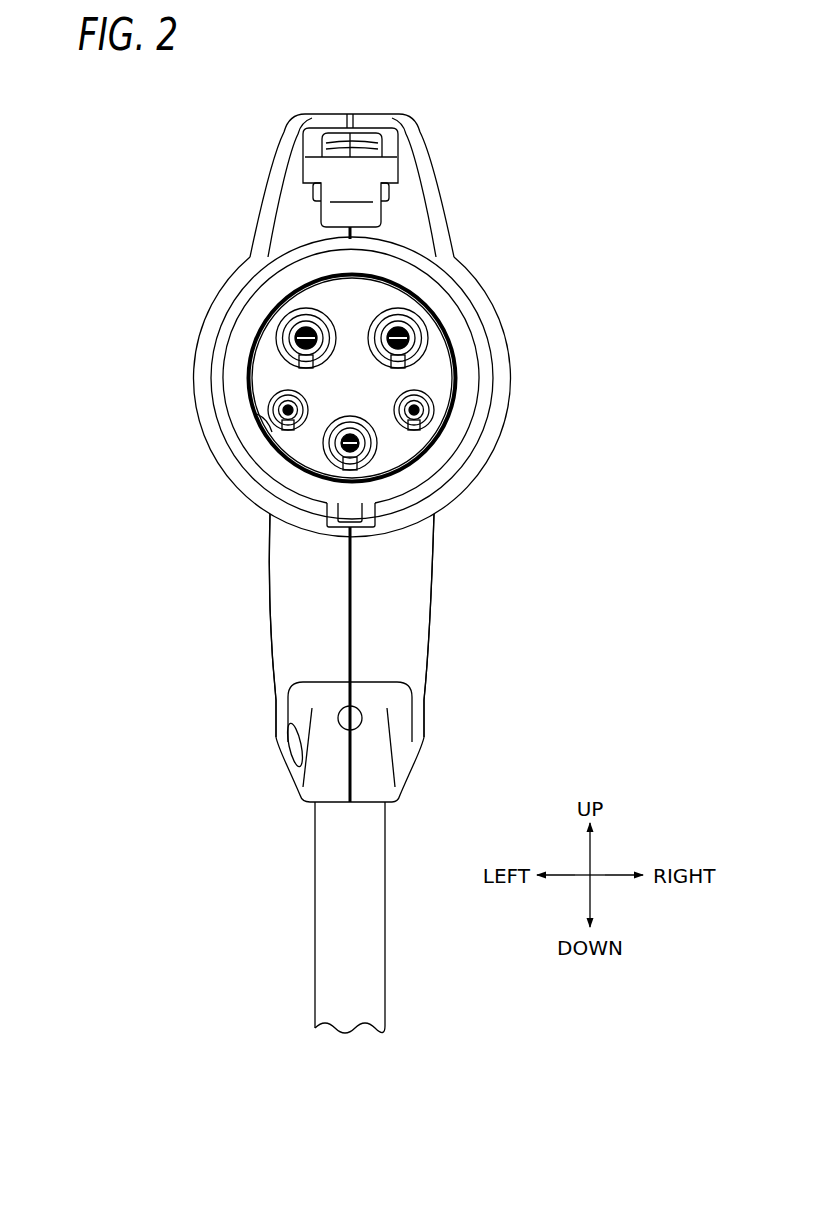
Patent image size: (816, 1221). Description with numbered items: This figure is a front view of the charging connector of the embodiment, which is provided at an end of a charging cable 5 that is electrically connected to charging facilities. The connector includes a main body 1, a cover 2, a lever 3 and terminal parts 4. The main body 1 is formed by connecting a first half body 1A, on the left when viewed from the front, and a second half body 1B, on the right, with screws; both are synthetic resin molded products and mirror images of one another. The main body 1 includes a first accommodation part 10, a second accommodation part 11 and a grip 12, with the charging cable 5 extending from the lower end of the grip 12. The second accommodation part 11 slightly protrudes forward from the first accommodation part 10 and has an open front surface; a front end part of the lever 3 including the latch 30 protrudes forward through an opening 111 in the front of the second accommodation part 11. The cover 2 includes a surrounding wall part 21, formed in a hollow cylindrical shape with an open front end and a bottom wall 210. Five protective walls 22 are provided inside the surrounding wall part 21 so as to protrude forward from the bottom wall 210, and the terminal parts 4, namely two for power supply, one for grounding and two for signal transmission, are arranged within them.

The main body 1 is at (512, 395).
The first half body 1A is at (275, 645).
The second half body 1B is at (424, 647).
The cover 2 is at (475, 333).
The lever 3 is at (398, 167).
The terminal parts 4 is at (291, 322).
The charging cable 5 is at (312, 888).
The first accommodation part 10 is at (447, 497).
The second accommodation part 11 is at (413, 127).
The grip 12 is at (284, 607).
The surrounding wall part 21 is at (236, 386).
The protective walls 22 is at (279, 340).
The latch 30 is at (335, 213).
The opening 111 is at (340, 143).
The bottom wall 210 is at (388, 385).